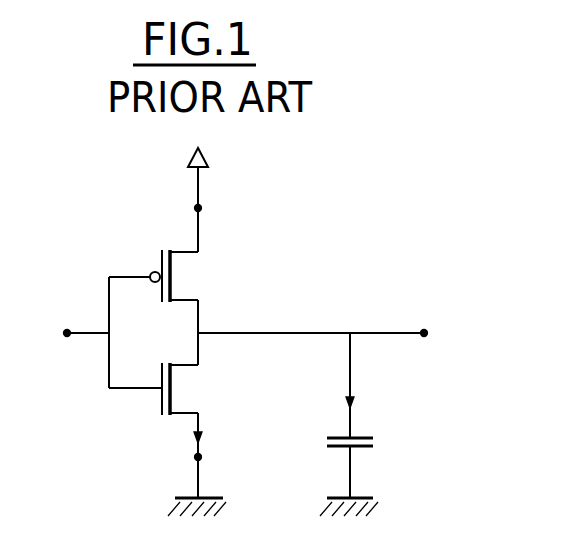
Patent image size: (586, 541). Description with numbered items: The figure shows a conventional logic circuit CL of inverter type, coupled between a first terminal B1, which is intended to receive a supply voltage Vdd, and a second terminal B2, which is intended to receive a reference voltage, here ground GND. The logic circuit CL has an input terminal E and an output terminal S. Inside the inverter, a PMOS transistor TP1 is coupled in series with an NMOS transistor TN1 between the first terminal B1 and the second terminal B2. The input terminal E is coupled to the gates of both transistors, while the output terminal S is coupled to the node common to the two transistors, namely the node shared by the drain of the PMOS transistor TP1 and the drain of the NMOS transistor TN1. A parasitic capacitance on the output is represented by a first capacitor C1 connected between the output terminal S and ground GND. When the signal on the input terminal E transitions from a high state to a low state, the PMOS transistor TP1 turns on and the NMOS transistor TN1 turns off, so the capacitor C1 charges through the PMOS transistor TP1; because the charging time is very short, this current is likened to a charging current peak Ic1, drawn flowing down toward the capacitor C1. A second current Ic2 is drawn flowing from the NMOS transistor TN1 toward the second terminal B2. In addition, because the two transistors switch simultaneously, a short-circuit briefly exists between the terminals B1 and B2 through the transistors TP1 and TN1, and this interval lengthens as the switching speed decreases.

The logic circuit CL is at (155, 280).
The supply voltage Vdd is at (207, 155).
The first terminal B1 is at (203, 210).
The PMOS transistor TP1 is at (202, 277).
The NMOS transistor TN1 is at (202, 391).
The input terminal E is at (67, 340).
The output terminal S is at (430, 333).
The current through TN1 Ic2 is at (211, 435).
The second terminal B2 is at (192, 457).
The charging current peak Ic1 is at (364, 385).
The first capacitor C1 is at (388, 439).
The ground GND is at (157, 502).